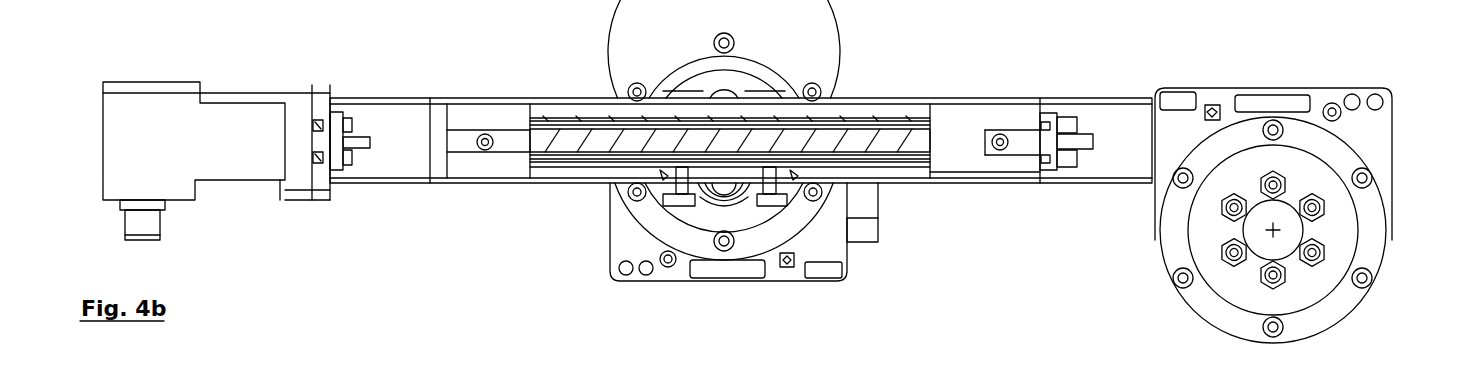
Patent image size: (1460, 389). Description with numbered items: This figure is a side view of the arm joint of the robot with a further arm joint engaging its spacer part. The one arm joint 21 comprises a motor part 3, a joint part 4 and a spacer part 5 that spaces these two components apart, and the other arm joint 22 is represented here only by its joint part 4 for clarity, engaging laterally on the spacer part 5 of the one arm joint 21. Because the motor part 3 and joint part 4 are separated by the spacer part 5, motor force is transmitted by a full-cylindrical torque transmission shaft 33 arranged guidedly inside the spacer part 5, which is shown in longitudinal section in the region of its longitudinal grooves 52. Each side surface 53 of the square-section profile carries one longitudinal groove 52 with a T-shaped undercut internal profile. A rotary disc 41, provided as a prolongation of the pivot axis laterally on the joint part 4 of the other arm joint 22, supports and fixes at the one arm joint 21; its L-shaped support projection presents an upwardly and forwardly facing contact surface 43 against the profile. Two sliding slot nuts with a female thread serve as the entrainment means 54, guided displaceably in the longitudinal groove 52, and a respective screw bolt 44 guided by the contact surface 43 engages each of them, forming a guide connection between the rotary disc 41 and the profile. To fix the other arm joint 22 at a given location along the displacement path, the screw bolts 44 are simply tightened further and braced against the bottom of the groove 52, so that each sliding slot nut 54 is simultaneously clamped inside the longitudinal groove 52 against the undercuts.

The motor part 3 is at (245, 203).
The joint part 4 is at (1290, 88).
The spacer part 5 is at (961, 92).
The one arm joint 21 is at (168, 64).
The other arm joint 22 is at (648, 48).
The torque transmission shaft 33 is at (874, 132).
The rotary disc 41 is at (740, 215).
The contact surface 43 is at (700, 215).
The screw bolt 44 is at (685, 198).
The longitudinal groove 52 is at (902, 174).
The side surface 53 is at (871, 188).
The entrainment means 54 is at (660, 175).